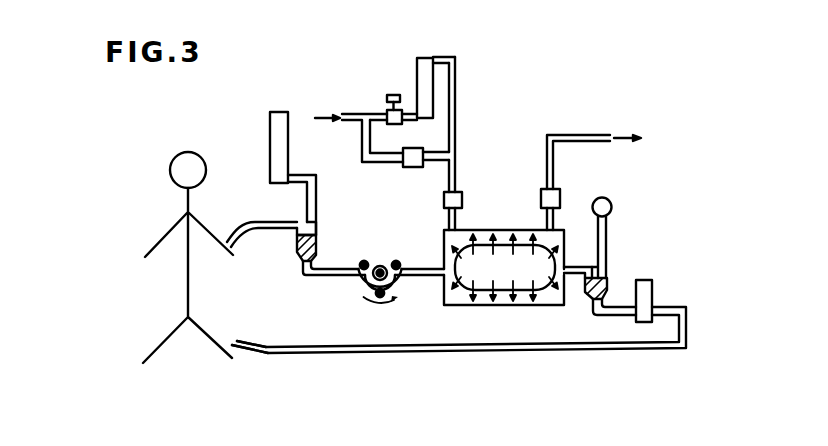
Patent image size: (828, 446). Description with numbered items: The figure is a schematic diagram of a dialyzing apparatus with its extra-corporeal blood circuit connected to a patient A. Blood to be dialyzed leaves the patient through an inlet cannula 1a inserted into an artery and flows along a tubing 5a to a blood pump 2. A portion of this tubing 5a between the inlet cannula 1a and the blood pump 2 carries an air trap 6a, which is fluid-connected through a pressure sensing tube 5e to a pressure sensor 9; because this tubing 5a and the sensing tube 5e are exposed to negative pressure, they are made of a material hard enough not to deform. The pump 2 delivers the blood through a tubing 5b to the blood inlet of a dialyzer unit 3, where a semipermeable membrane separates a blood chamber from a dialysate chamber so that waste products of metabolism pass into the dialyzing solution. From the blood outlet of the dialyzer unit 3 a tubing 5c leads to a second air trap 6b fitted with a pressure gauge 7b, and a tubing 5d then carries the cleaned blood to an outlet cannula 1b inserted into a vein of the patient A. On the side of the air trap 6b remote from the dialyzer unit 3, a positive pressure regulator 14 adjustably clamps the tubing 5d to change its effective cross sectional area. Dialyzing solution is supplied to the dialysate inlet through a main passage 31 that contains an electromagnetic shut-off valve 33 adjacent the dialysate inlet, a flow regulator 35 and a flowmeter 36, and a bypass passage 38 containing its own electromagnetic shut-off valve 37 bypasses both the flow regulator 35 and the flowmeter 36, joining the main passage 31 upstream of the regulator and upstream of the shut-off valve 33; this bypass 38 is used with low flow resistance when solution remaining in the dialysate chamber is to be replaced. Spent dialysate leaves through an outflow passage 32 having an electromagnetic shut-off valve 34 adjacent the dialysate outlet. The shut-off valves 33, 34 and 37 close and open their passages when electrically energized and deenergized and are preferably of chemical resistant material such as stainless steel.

The patient A is at (188, 152).
The inlet cannula 1a is at (227, 241).
The outlet cannula 1b is at (238, 344).
The blood pump 2 is at (378, 265).
The dialyzer unit 3 is at (486, 230).
The tubing 5a is at (331, 269).
The tubing 5b is at (423, 277).
The tubing 5c is at (574, 267).
The tubing 5d is at (614, 317).
The pressure sensing tube 5e is at (317, 216).
The air trap 6a is at (297, 251).
The air trap 6b is at (588, 293).
The pressure gauge 7b is at (610, 205).
The pressure sensor 9 is at (278, 112).
The positive pressure regulator 14 is at (644, 280).
The main passage 31 is at (456, 142).
The outflow passage 32 is at (547, 150).
The electromagnetic shut-off valve 33 is at (446, 200).
The electromagnetic shut-off valve 34 is at (560, 199).
The flow regulator 35 is at (387, 97).
The flowmeter 36 is at (423, 58).
The electromagnetic shut-off valve 37 is at (414, 167).
The bypass passage 38 is at (362, 146).